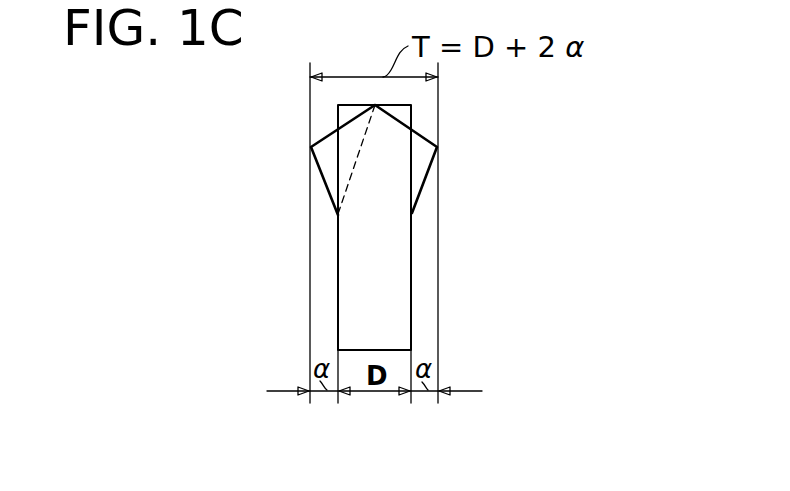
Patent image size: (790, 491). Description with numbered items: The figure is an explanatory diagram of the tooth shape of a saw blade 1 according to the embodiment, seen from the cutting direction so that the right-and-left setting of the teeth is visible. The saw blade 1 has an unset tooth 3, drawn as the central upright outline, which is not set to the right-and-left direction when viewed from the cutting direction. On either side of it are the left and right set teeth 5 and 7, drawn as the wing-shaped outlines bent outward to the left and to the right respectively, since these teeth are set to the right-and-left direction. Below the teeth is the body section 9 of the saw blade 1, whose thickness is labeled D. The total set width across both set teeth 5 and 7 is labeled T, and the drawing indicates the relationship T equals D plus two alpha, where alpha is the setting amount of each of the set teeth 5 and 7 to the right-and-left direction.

The saw blade 1 is at (327, 233).
The unset tooth 3 is at (407, 115).
The left set tooth 5 is at (323, 160).
The right set tooth 7 is at (427, 157).
The body section 9 is at (405, 259).